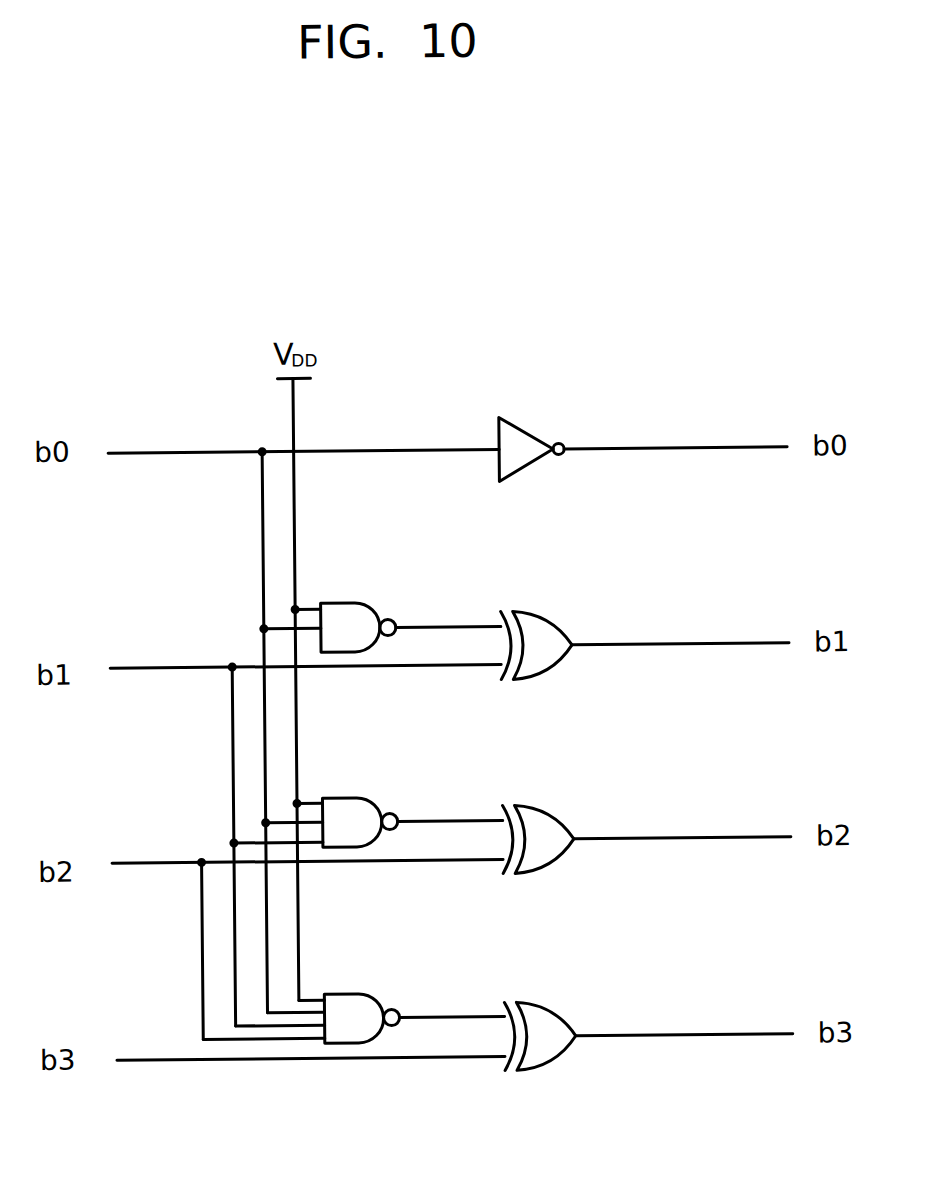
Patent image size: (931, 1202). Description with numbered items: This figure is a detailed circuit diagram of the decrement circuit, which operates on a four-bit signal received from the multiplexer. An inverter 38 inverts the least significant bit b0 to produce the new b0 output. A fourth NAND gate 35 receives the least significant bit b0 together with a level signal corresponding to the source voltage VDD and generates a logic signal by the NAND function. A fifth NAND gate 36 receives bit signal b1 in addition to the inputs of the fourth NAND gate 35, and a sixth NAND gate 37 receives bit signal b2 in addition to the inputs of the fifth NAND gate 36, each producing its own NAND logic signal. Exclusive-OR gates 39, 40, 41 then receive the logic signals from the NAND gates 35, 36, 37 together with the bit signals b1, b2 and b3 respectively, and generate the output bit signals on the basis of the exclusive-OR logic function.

The fourth NAND gate 35 is at (359, 602).
The fifth NAND gate 36 is at (359, 797).
The sixth NAND gate 37 is at (359, 993).
The inverter 38 is at (525, 431).
The exclusive-OR gate 39 is at (546, 619).
The exclusive-OR gate 40 is at (546, 813).
The exclusive-OR gate 41 is at (545, 1010).